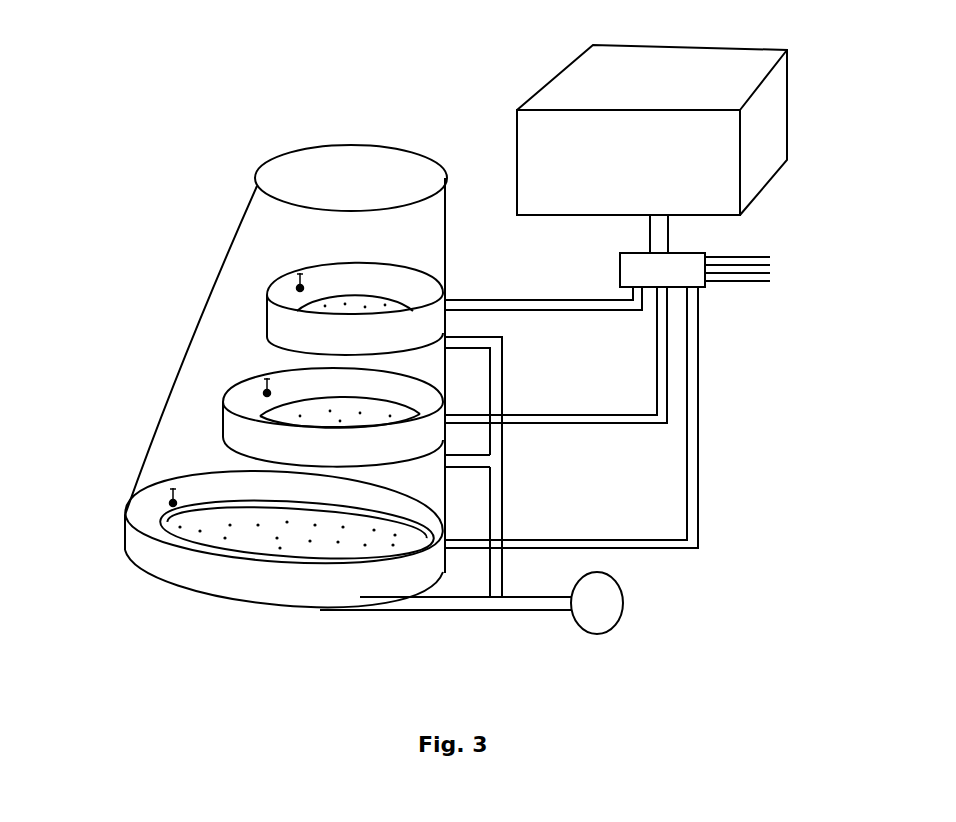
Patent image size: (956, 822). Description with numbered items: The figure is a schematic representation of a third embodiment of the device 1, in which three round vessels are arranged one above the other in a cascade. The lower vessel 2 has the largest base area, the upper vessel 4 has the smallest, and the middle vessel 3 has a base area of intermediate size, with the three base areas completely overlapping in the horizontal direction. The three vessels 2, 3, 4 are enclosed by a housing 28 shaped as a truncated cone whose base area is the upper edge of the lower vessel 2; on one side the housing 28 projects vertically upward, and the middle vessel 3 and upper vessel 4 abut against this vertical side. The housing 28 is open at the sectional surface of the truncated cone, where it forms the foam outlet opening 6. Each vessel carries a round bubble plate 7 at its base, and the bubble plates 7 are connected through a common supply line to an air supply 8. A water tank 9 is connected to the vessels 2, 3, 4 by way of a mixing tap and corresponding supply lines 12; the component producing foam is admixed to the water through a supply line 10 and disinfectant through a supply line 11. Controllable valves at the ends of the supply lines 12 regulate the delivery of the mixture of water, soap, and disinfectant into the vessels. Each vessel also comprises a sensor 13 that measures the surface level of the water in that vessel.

The device 1 is at (250, 370).
The lower vessel 2 is at (210, 581).
The middle vessel 3 is at (280, 451).
The upper vessel 4 is at (323, 343).
The foam outlet opening 6 is at (313, 172).
The bubble plates 7 is at (359, 320).
The air supply 8 is at (628, 612).
The water tank 9 is at (702, 88).
The supply line for the component producing foam 10 is at (782, 257).
The supply line for disinfectant 11 is at (782, 282).
The supply lines 12 is at (456, 318).
The sensor 13 is at (184, 488).
The housing 28 is at (190, 312).